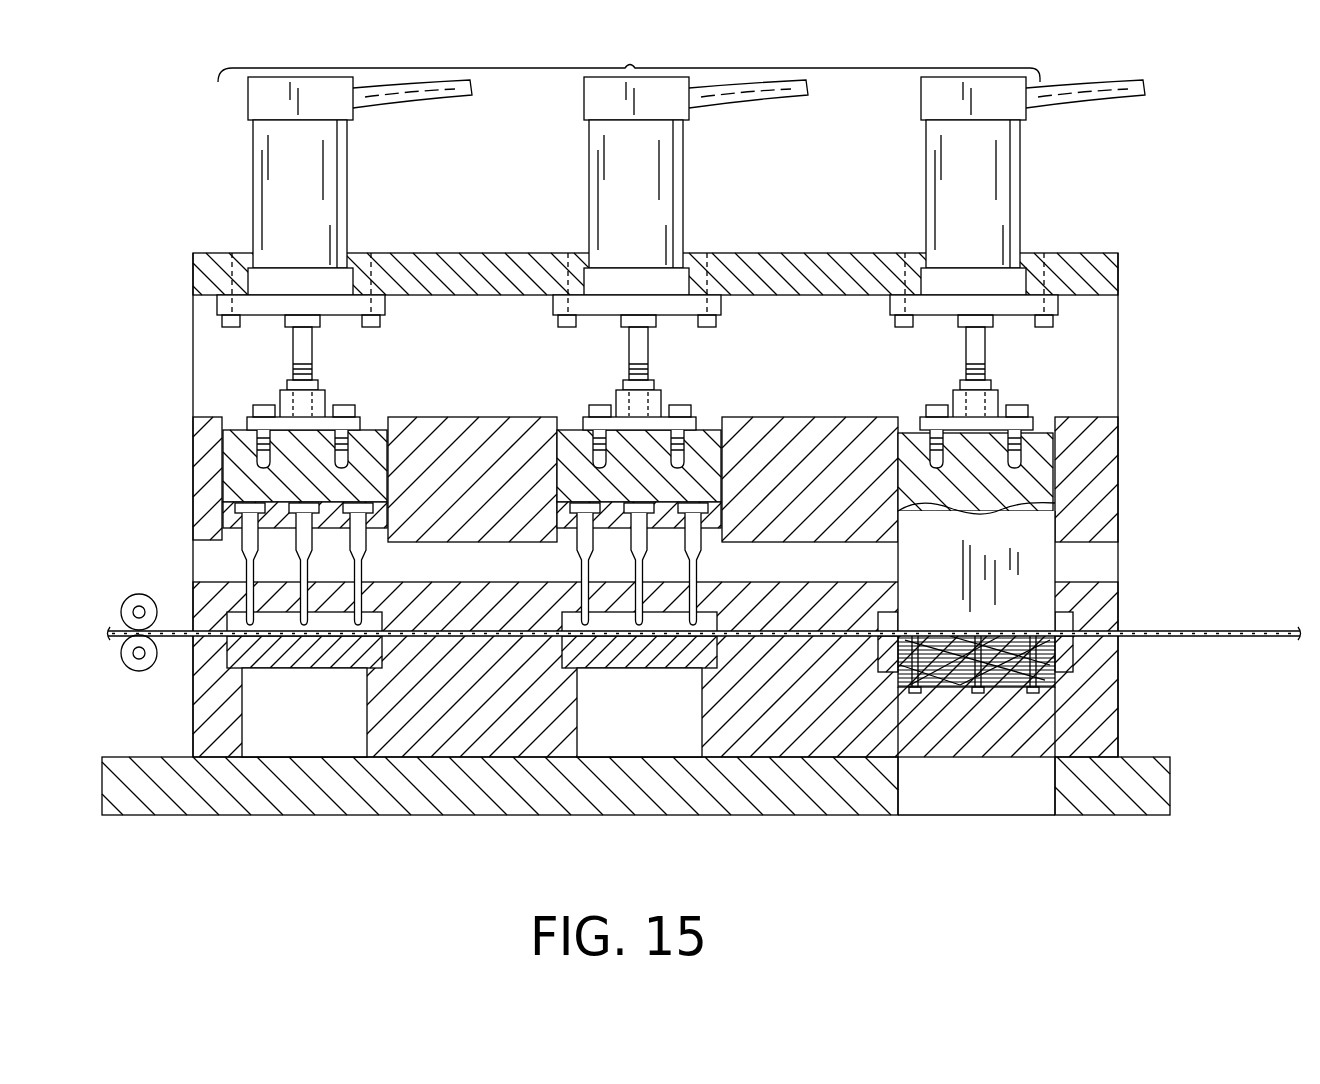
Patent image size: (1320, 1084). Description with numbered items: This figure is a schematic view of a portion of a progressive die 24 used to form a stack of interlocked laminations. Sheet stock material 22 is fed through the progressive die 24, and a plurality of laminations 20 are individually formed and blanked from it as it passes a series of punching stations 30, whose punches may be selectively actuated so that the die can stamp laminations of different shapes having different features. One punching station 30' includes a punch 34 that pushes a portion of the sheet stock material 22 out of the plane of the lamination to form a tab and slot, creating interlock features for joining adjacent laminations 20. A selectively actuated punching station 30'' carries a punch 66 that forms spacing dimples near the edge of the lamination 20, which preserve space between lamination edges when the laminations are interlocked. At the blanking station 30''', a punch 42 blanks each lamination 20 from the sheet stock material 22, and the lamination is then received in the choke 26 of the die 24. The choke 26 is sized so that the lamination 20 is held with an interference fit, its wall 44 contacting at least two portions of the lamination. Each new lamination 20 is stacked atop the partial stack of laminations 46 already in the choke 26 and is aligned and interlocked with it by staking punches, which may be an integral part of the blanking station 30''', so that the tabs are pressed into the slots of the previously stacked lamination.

The punching stations 30 is at (681, 255).
The punching station 30' is at (344, 272).
The selectively actuated punching station 30'' is at (680, 272).
The blanking station 30''' is at (1017, 272).
The progressive die 24 is at (1207, 298).
The punch 34 is at (373, 428).
The punch 66 is at (710, 428).
The punch 42 is at (1037, 405).
The sheet stock material 22 is at (1171, 631).
The lamination 20 is at (995, 697).
The wall 44 is at (1057, 748).
The partial stack of laminations 46 is at (908, 700).
The choke 26 is at (1047, 716).